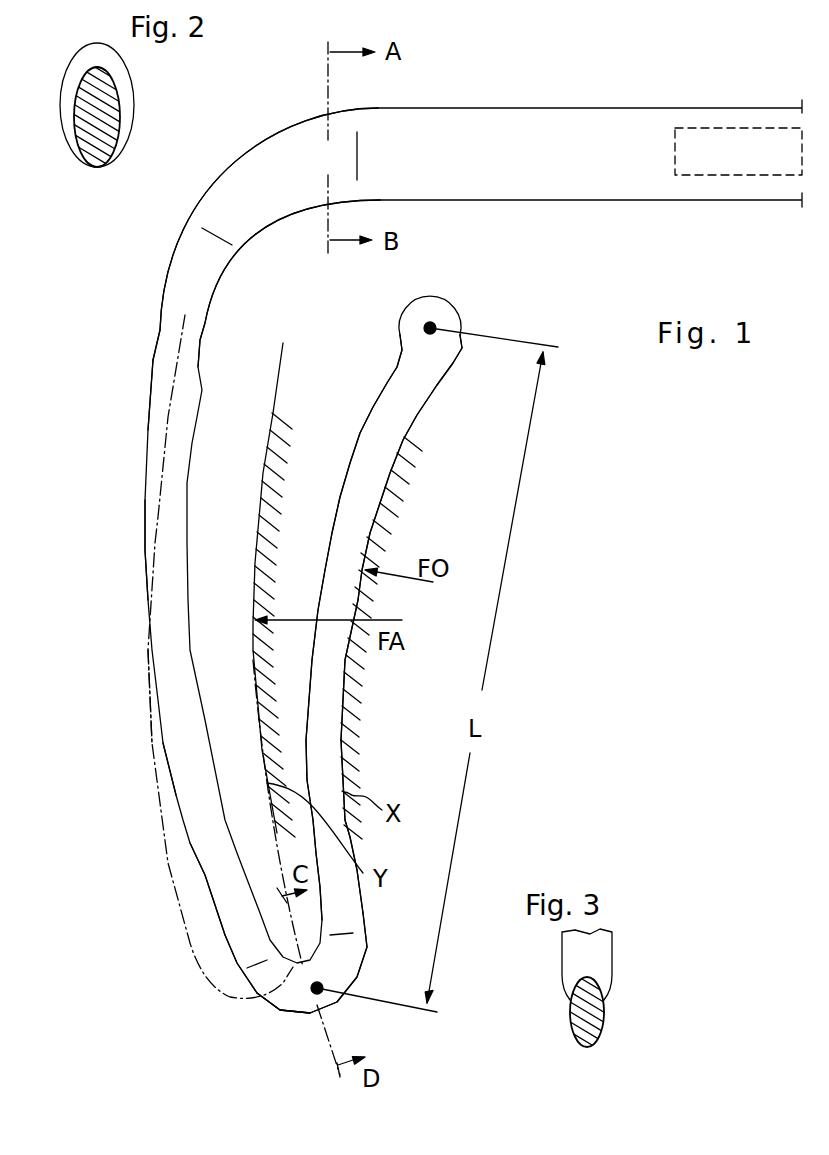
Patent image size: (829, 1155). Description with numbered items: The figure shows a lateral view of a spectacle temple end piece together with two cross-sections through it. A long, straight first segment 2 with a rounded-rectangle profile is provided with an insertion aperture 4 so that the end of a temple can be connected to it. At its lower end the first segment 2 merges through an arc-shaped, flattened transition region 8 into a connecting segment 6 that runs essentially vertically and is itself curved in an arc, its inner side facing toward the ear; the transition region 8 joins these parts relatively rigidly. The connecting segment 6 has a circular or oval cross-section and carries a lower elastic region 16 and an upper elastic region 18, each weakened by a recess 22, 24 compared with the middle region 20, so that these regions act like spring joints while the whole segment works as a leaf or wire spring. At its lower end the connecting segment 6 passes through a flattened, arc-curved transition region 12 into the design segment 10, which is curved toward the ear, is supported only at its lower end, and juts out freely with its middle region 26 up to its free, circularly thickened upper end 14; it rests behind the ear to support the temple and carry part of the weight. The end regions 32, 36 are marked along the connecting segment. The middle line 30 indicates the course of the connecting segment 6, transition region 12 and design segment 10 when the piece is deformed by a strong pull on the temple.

In FIG. 2, the first segment 2 is at (128, 98).
In FIG. 1, the first segment 2 is at (615, 113).
In FIG. 1, the insertion aperture 4 is at (693, 140).
In FIG. 1, the connecting segment 6 is at (134, 432).
In FIG. 2, the transition region 8 is at (110, 145).
In FIG. 1, the transition region 8 is at (262, 146).
In FIG. 1, the design segment 10 is at (362, 695).
In FIG. 3, the design segment 10 is at (603, 952).
In FIG. 1, the transition region 12 is at (287, 993).
In FIG. 3, the transition region 12 is at (600, 1012).
In FIG. 1, the end 14 is at (447, 312).
In FIG. 1, the elastic region 16 is at (237, 927).
In FIG. 1, the elastic region 18 is at (168, 306).
In FIG. 1, the middle region 20 is at (168, 511).
In FIG. 1, the recess 22 is at (203, 882).
In FIG. 1, the recess 24 is at (207, 320).
In FIG. 1, the middle region 26 is at (332, 748).
In FIG. 1, the middle line 30 is at (152, 740).
In FIG. 1, the end region 32 is at (168, 358).
In FIG. 1, the end region 36 is at (185, 777).